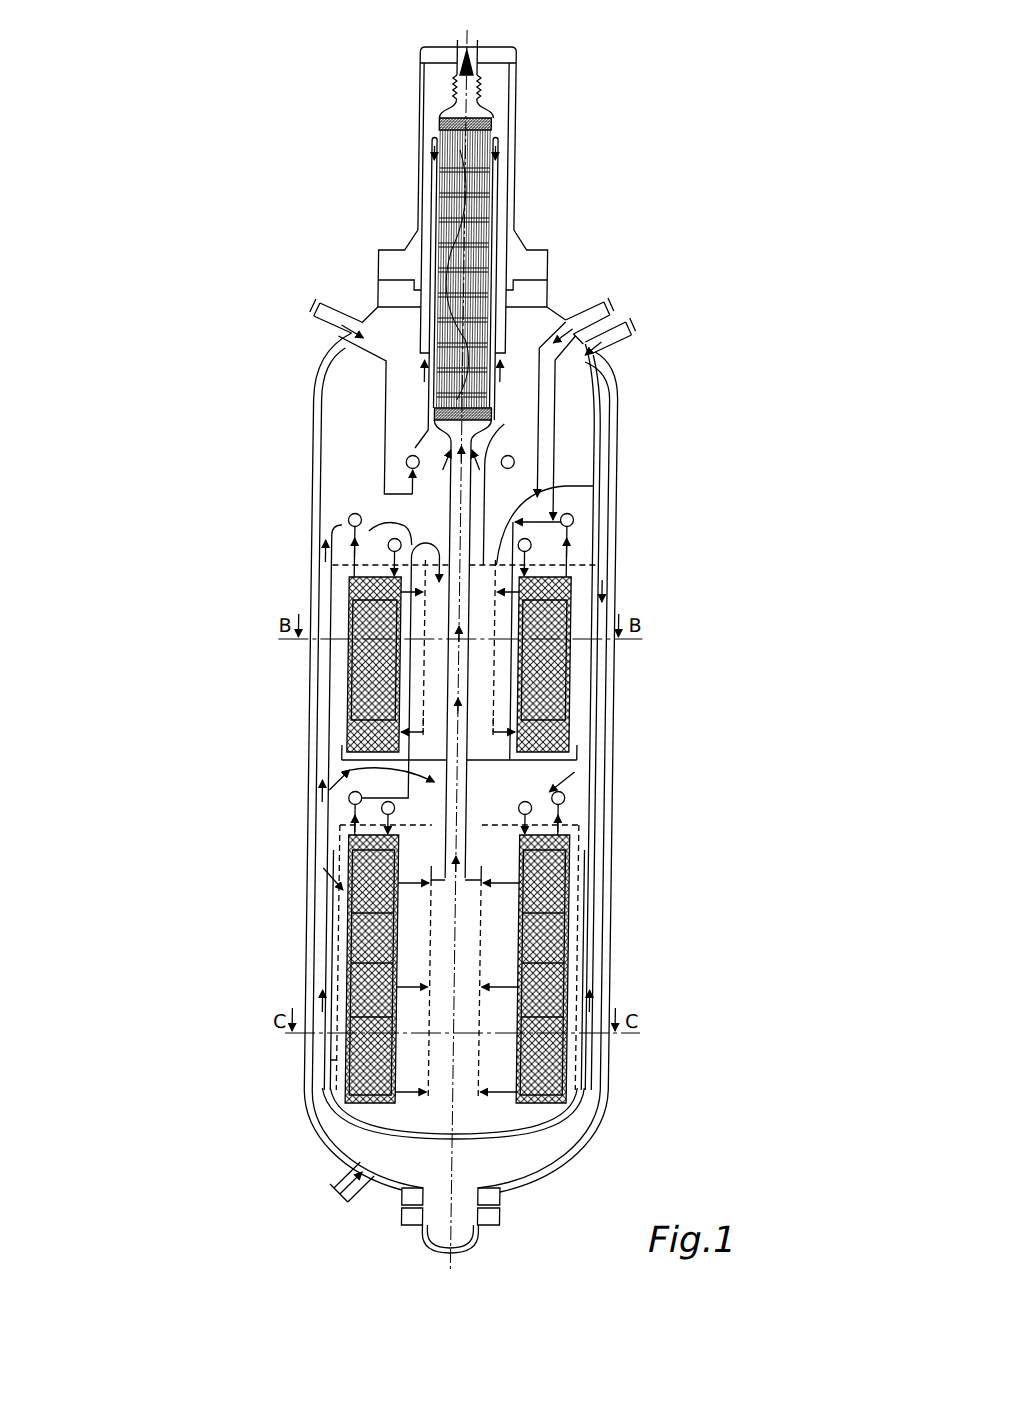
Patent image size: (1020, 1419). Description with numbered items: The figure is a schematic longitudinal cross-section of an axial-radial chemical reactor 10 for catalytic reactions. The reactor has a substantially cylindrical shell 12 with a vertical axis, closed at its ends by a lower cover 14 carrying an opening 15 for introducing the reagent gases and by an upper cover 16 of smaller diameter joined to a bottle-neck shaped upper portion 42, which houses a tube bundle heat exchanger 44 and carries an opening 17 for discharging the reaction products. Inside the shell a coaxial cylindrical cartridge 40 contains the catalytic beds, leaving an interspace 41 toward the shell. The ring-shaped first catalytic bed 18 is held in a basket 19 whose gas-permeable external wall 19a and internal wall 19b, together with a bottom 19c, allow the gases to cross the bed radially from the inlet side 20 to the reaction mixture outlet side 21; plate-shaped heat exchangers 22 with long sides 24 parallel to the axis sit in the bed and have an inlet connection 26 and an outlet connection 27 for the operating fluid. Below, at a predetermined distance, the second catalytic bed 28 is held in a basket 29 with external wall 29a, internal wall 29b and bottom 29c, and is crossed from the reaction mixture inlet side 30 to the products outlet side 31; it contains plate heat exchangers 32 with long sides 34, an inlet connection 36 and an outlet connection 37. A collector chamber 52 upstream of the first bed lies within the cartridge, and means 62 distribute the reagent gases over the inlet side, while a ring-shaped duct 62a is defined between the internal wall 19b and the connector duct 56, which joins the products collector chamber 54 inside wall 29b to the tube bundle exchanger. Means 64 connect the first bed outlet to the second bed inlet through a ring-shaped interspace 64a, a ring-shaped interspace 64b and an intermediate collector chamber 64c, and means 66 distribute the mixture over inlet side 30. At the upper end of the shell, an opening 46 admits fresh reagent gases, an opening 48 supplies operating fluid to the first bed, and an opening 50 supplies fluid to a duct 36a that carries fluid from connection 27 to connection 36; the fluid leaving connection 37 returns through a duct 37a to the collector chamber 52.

The chemical reactor 10 is at (150, 305).
The shell 12 is at (341, 817).
The lower cover 14 is at (402, 1198).
The opening 15 is at (352, 1182).
The upper cover 16 is at (380, 300).
The opening 17 is at (482, 45).
The first catalytic bed 18 is at (349, 682).
The basket 19 is at (593, 744).
The external wall 19a is at (340, 720).
The internal wall 19b is at (594, 692).
The bottom 19c is at (355, 772).
The inlet side 20 is at (355, 599).
The reaction mixture outlet side 21 is at (344, 662).
The heat exchangers 22 is at (589, 702).
The long sides 24 is at (581, 599).
The inlet connection 26 is at (582, 523).
The outlet connection 27 is at (593, 562).
The second catalytic bed 28 is at (393, 963).
The basket 29 is at (592, 892).
The external wall 29a is at (352, 907).
The internal wall 29b is at (553, 928).
The bottom 29c is at (526, 1142).
The reaction mixture inlet side 30 is at (354, 1064).
The reaction gaseous products outlet side 31 is at (415, 1090).
The heat exchangers 32 is at (573, 973).
The long sides 34 is at (590, 877).
The inlet connection 36 is at (586, 817).
The duct 36a is at (591, 617).
The outlet connection 37 is at (587, 842).
The duct 37a is at (354, 520).
The cartridge 40 is at (354, 461).
The interspace 41 is at (346, 852).
The upper portion 42 is at (421, 154).
The tube bundle heat exchanger 44 is at (495, 127).
The opening 46 is at (318, 306).
The opening 48 is at (614, 305).
The opening 50 is at (638, 332).
The collector chamber 52 is at (462, 517).
The collector chamber 54 is at (453, 945).
The connector duct 56 is at (511, 432).
The means for distributing the reagent gases 62 is at (486, 562).
The ring-shaped duct 62a is at (586, 478).
The means for putting in fluid communication 64 is at (356, 802).
The ring-shaped interspace 64a is at (349, 704).
The ring-shaped interspace 64b is at (346, 838).
The intermediate collector chamber 64c is at (525, 800).
The means for distributing the reaction mixture 66 is at (362, 882).